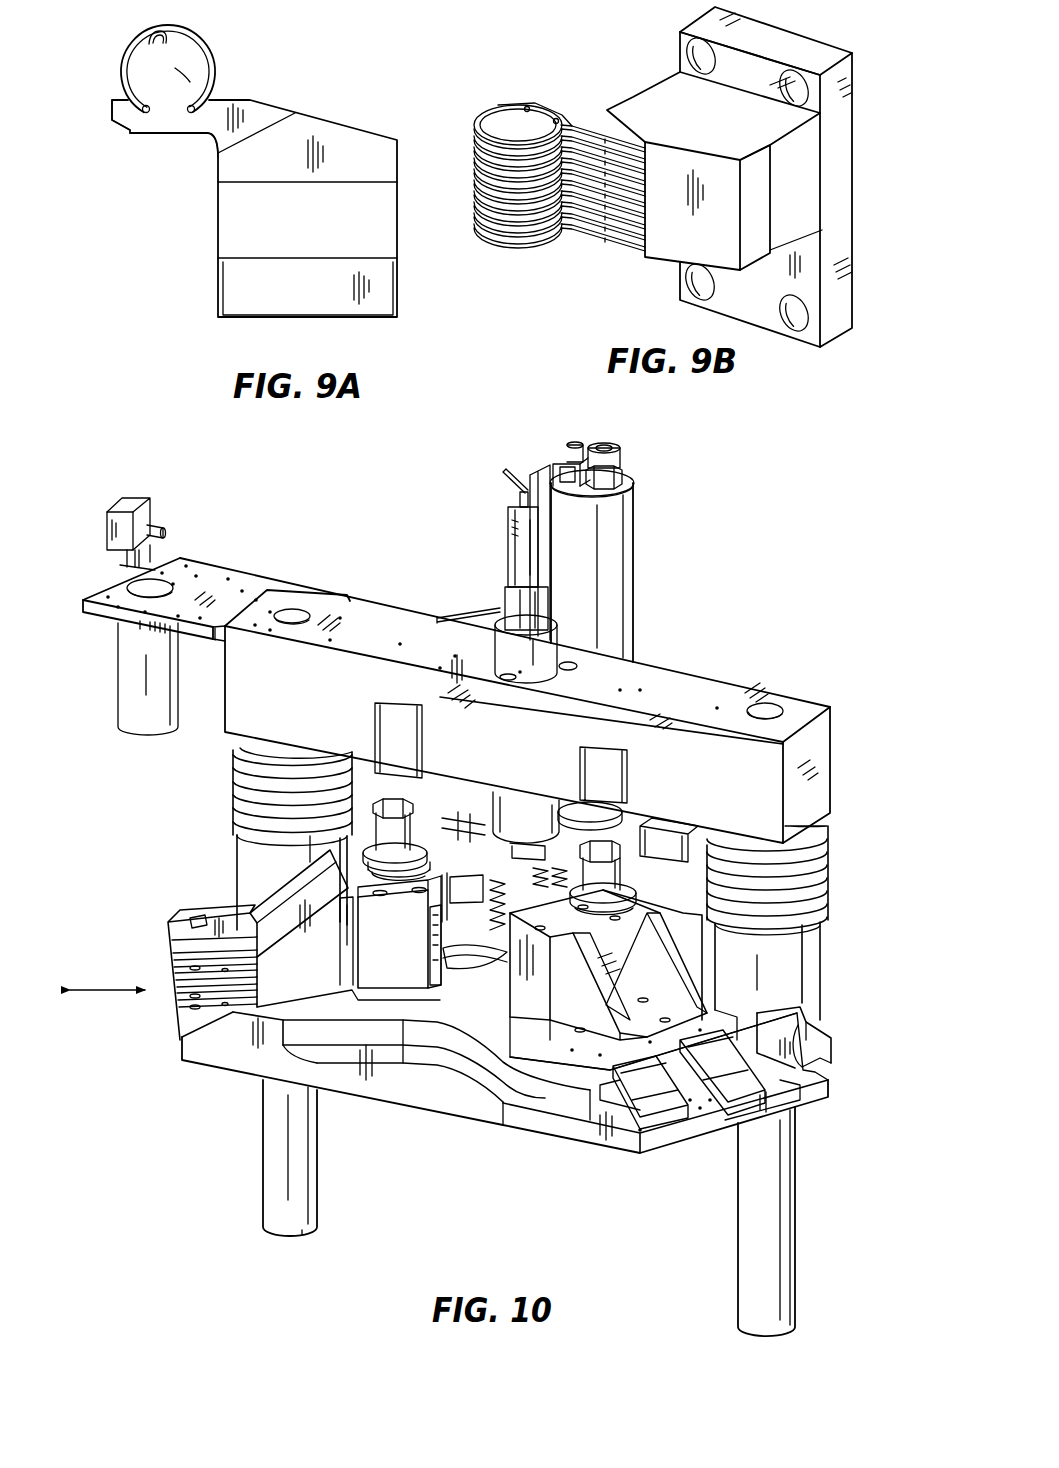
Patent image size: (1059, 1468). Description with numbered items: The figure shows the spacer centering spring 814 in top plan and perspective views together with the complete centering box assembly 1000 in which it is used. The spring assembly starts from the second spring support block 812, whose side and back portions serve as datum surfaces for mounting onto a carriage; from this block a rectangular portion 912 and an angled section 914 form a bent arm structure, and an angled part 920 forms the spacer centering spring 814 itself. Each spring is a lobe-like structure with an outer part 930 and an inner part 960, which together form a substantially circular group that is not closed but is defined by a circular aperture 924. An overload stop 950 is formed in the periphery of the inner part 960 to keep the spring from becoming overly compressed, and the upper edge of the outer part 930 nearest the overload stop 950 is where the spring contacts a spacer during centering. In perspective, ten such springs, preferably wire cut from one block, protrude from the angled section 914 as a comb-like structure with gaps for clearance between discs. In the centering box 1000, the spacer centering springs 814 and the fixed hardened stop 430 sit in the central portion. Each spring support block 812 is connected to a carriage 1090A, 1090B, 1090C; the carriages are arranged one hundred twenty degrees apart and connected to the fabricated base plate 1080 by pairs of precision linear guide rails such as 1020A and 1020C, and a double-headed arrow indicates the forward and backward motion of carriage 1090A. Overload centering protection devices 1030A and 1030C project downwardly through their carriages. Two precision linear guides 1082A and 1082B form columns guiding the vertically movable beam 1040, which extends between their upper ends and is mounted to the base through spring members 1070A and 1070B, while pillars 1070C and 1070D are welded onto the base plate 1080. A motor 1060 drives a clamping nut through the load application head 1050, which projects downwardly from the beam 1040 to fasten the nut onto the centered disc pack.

In FIG. 9A, the second spring support block 812 is at (242, 288).
In FIG. 9A, the spacer centering spring 814 is at (394, 96).
In FIG. 10, the spacer centering spring 814 is at (430, 912).
In FIG. 9A, the rectangular portion 912 is at (237, 237).
In FIG. 9B, the rectangular portion 912 is at (740, 103).
In FIG. 9A, the angled section 914 is at (315, 128).
In FIG. 9B, the angled section 914 is at (673, 237).
In FIG. 9A, the angled part 920 is at (208, 120).
In FIG. 9B, the angled part 920 is at (577, 115).
In FIG. 9A, the circular aperture 924 is at (145, 122).
In FIG. 9A, the outer part 930 is at (200, 34).
In FIG. 9A, the overload stop 950 is at (140, 44).
In FIG. 9A, the inner part 960 is at (177, 70).
In FIG. 10, the centering box assembly 1000 is at (727, 594).
In FIG. 10, the beam 1040 is at (360, 627).
In FIG. 10, the motor 1060 is at (613, 547).
In FIG. 10, the load application head 1050 is at (523, 836).
In FIG. 10, the overload centering protection device 1030A is at (383, 830).
In FIG. 10, the overload centering protection device 1030C is at (626, 823).
In FIG. 10, the carriage 1090B is at (673, 860).
In FIG. 10, the spring member 1070A is at (237, 807).
In FIG. 10, the spring member 1070B is at (825, 862).
In FIG. 10, the pillar 1070C is at (247, 847).
In FIG. 10, the pillar 1070D is at (787, 983).
In FIG. 10, the precision linear guide rails 1020A is at (177, 970).
In FIG. 10, the precision linear guide rails 1020C is at (663, 1107).
In FIG. 10, the fixed hardened stop 430 is at (440, 978).
In FIG. 10, the carriage 1090A is at (365, 988).
In FIG. 10, the carriage 1090C is at (530, 1007).
In FIG. 10, the base plate 1080 is at (565, 1097).
In FIG. 10, the precision linear guide 1082A is at (273, 1188).
In FIG. 10, the precision linear guide 1082B is at (777, 1217).